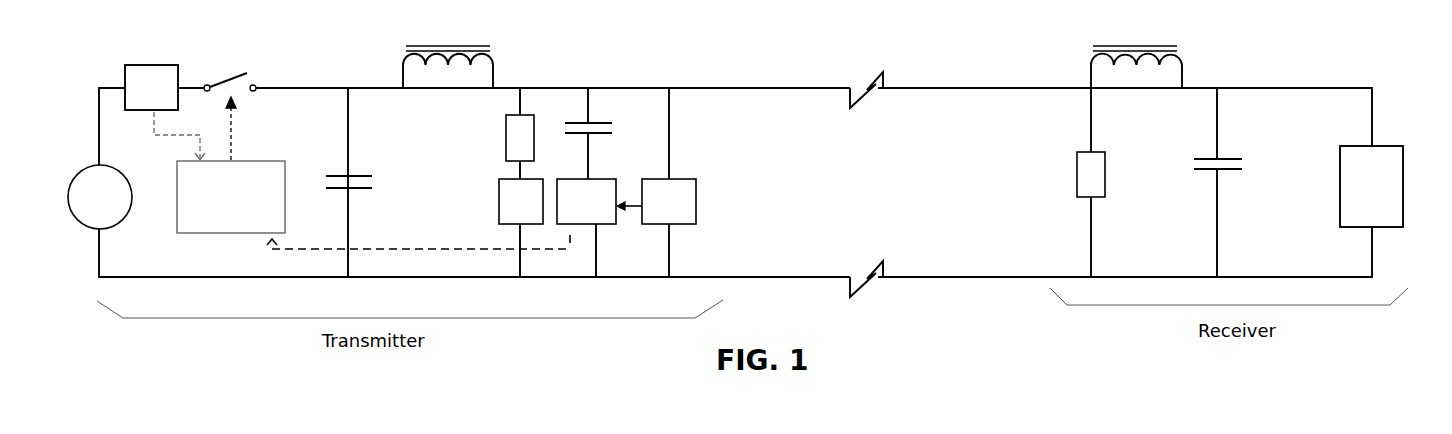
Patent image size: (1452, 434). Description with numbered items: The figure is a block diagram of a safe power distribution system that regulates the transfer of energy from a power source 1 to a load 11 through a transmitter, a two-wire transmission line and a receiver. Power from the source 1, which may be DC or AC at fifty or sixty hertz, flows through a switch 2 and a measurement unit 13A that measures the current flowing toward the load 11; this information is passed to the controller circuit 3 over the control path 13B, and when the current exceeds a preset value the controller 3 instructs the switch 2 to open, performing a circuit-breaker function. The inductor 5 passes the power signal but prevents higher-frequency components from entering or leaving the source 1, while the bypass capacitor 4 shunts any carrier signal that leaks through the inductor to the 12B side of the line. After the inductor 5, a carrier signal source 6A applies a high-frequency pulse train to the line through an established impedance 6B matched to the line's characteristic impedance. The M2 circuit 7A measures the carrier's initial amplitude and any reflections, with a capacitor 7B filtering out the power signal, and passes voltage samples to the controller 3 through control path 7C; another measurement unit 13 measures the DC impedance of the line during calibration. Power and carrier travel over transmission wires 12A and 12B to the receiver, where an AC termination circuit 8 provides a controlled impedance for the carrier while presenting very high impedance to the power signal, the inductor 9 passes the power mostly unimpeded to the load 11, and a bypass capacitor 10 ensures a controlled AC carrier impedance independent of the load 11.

The power source 1 is at (117, 203).
The switch 2 is at (232, 80).
The controller circuit 3 is at (264, 167).
The bypass capacitor 4 is at (352, 176).
The inductor 5 is at (449, 46).
The carrier signal source 6A is at (504, 206).
The established impedance 6B is at (507, 137).
The M2 circuit 7A is at (603, 213).
The capacitor 7B is at (596, 135).
The control path 7C is at (403, 248).
The AC termination circuit 8 is at (1082, 174).
The inductor 9 is at (1143, 46).
The bypass capacitor 10 is at (1226, 155).
The load 11 is at (1398, 194).
The transmission wire 12A is at (836, 90).
The transmission wire 12B is at (843, 276).
The measurement unit M3 13 is at (696, 196).
The measurement unit M1 13A is at (146, 72).
The control path 13B is at (186, 142).